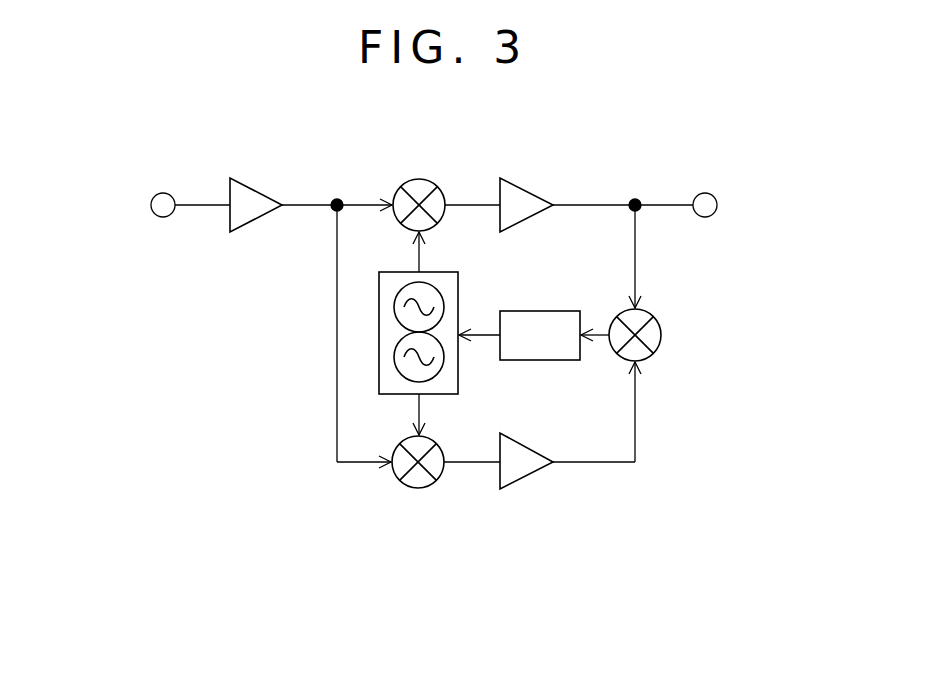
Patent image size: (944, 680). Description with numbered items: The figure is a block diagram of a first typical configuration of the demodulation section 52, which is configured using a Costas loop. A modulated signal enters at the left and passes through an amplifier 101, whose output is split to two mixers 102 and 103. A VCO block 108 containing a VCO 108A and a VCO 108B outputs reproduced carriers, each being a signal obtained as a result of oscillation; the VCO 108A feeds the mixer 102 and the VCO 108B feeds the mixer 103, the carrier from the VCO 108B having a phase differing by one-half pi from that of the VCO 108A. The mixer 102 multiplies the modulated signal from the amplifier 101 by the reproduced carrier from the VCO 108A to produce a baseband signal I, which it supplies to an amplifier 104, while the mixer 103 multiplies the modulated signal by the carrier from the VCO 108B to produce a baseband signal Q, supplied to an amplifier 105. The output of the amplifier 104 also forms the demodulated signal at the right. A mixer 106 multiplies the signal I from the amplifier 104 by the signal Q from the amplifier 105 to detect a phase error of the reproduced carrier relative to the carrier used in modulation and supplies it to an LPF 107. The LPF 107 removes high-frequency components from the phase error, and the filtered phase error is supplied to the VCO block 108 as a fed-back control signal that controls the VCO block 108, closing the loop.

The demodulation section 52 is at (590, 590).
The amplifier 101 is at (260, 188).
The mixer 102 is at (420, 178).
The mixer 103 is at (420, 488).
The amplifier 104 is at (528, 192).
The amplifier 105 is at (528, 475).
The mixer 106 is at (661, 336).
The LPF (Low Pass Filter) 107 is at (538, 311).
The VCO (Voltage Controlled Oscillator) block 108 is at (393, 336).
The VCO 108A is at (379, 310).
The VCO 108B is at (379, 358).